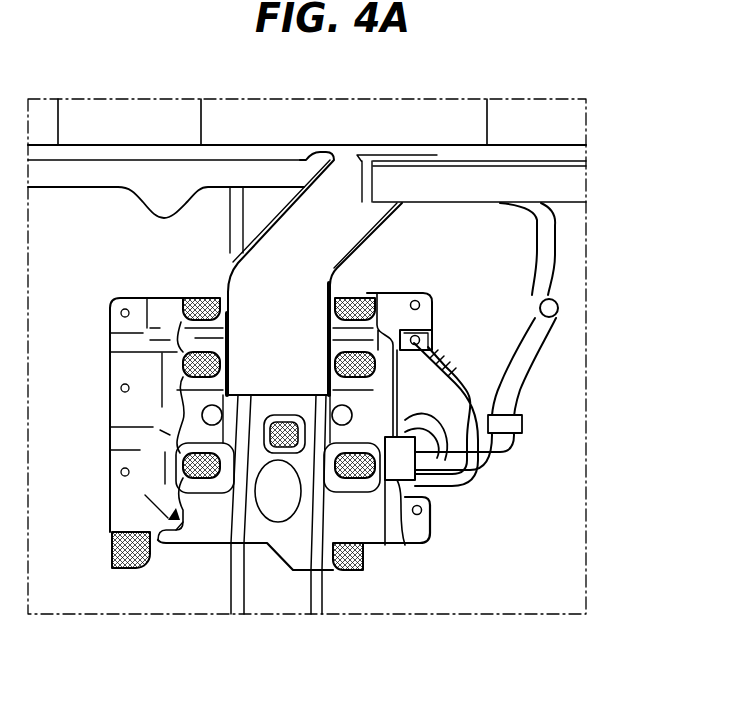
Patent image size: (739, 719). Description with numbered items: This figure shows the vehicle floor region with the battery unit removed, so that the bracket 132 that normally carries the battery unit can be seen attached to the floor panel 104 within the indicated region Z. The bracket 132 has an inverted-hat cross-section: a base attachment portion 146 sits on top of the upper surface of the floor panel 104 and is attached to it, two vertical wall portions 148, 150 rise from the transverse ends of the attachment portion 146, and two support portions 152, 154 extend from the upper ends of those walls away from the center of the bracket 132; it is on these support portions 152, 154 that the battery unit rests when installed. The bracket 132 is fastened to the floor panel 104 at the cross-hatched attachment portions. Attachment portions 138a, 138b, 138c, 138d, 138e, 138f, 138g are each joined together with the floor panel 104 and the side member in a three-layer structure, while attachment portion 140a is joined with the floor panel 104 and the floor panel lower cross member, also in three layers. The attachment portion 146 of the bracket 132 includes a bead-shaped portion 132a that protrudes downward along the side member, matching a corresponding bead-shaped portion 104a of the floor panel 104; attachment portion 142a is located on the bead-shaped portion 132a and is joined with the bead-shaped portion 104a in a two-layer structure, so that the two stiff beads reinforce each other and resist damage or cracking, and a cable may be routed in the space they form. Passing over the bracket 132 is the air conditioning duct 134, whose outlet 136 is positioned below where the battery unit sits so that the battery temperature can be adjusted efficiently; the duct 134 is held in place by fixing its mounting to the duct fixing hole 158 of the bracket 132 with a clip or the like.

The floor panel 104 is at (483, 603).
The bead-shaped portion 104a is at (293, 605).
The bracket 132 is at (346, 464).
The bead-shaped portion 132a is at (265, 525).
The air conditioning duct 134 is at (302, 227).
The outlet 136 is at (252, 398).
The attachment portion 138a is at (345, 572).
The attachment portion 138b is at (350, 480).
The attachment portion 138c is at (375, 400).
The attachment portion 138d is at (352, 297).
The attachment portion 138e is at (210, 478).
The attachment portion 138f is at (180, 355).
The attachment portion 138g is at (205, 298).
The attachment portion 140a is at (112, 548).
The attachment portion 142a is at (293, 520).
The attachment portion 146 is at (185, 527).
The vertical wall portion 148 is at (162, 310).
The vertical wall portion 150 is at (387, 303).
The support portion 152 is at (122, 478).
The support portion 154 is at (427, 522).
The duct fixing hole 158 is at (118, 388).
The region Z is at (545, 98).